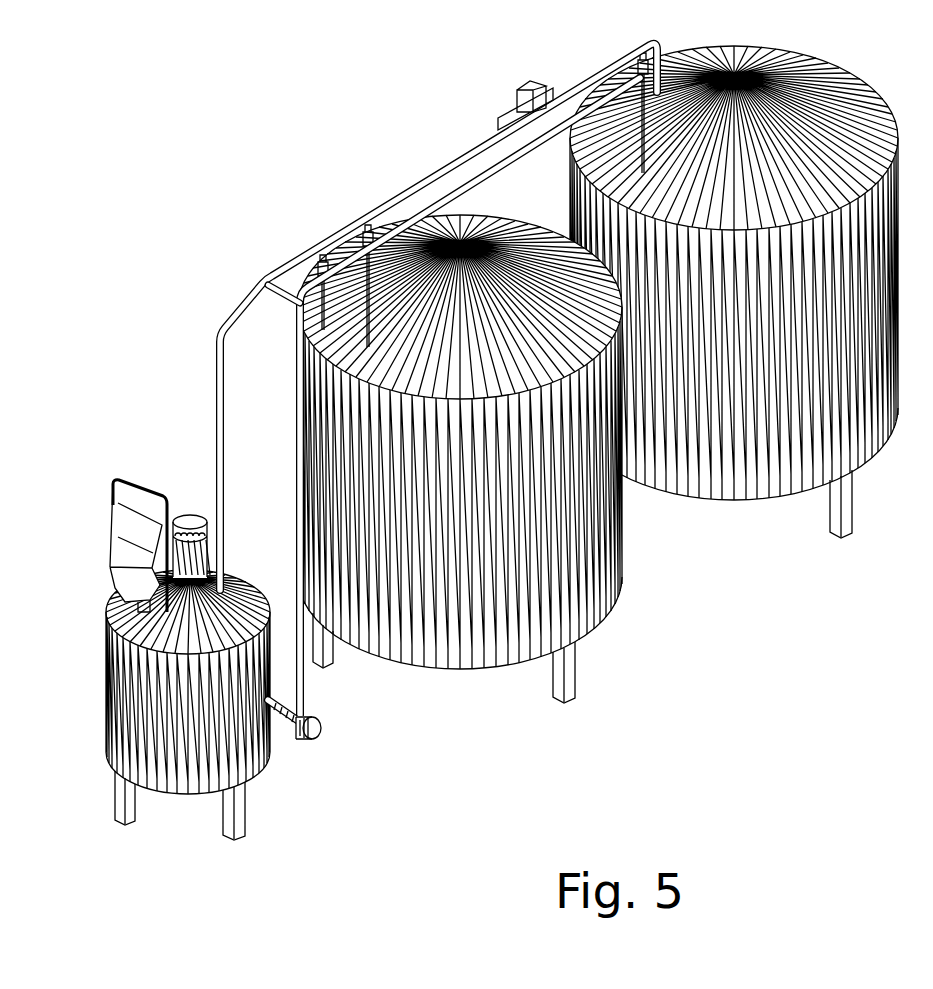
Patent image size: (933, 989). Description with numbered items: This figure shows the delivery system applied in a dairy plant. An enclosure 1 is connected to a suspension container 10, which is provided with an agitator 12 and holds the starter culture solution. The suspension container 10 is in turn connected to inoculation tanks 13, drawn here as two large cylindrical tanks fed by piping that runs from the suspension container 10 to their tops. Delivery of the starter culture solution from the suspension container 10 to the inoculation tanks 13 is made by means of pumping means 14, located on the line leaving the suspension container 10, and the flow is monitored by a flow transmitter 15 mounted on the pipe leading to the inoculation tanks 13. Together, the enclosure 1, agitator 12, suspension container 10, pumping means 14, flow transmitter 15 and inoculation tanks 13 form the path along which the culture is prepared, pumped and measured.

The enclosure 1 is at (115, 546).
The suspension container 10 is at (105, 702).
The agitator 12 is at (190, 517).
The inoculation tanks 13 is at (594, 611).
The pumping means 14 is at (316, 737).
The flow transmitter 15 is at (517, 87).